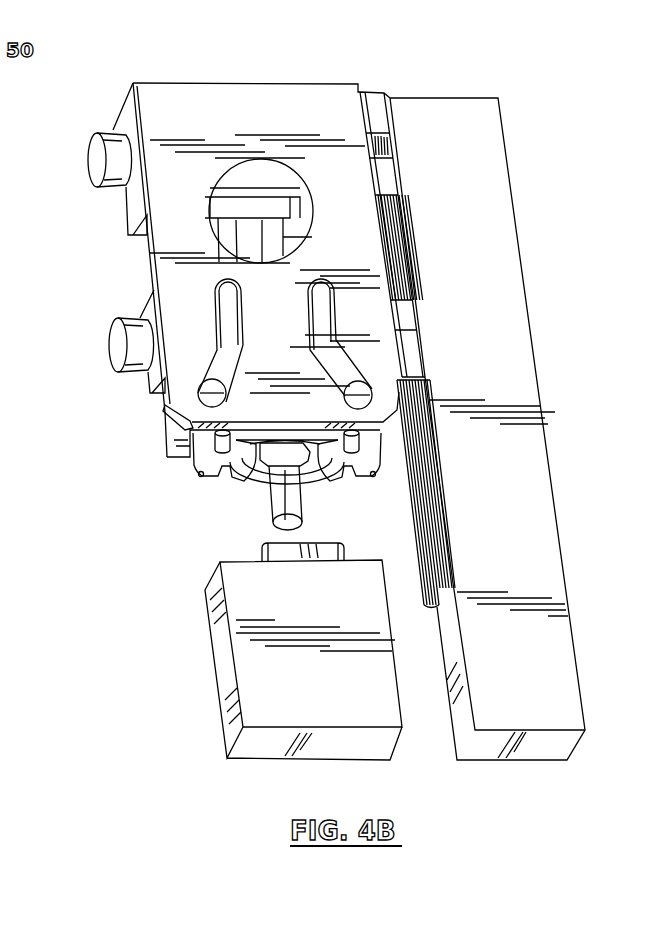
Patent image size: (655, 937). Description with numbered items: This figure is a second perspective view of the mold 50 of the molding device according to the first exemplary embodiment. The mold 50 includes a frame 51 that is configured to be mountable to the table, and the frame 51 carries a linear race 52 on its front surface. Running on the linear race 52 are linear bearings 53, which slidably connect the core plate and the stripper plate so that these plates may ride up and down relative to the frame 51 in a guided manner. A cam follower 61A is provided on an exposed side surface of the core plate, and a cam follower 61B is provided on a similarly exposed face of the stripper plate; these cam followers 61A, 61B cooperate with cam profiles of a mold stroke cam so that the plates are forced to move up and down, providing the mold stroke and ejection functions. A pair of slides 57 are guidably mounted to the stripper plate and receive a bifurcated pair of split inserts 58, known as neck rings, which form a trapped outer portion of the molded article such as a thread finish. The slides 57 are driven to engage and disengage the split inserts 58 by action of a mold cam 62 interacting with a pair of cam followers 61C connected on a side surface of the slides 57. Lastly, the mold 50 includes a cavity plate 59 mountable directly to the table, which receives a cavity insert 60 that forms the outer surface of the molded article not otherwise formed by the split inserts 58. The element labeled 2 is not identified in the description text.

The mold 50 is at (495, 82).
The frame 51 is at (488, 173).
The linear race 52 is at (410, 485).
The linear bearings 53 is at (378, 116).
The slides 57 is at (167, 437).
The split inserts 58 is at (190, 460).
The cavity plate 59 is at (208, 627).
The cavity insert 60 is at (262, 547).
The cam follower 61A is at (98, 158).
The cam follower 61B is at (119, 343).
The cam followers 61C is at (198, 390).
The mold cam 62 is at (182, 207).
The shaft 2 is at (268, 497).